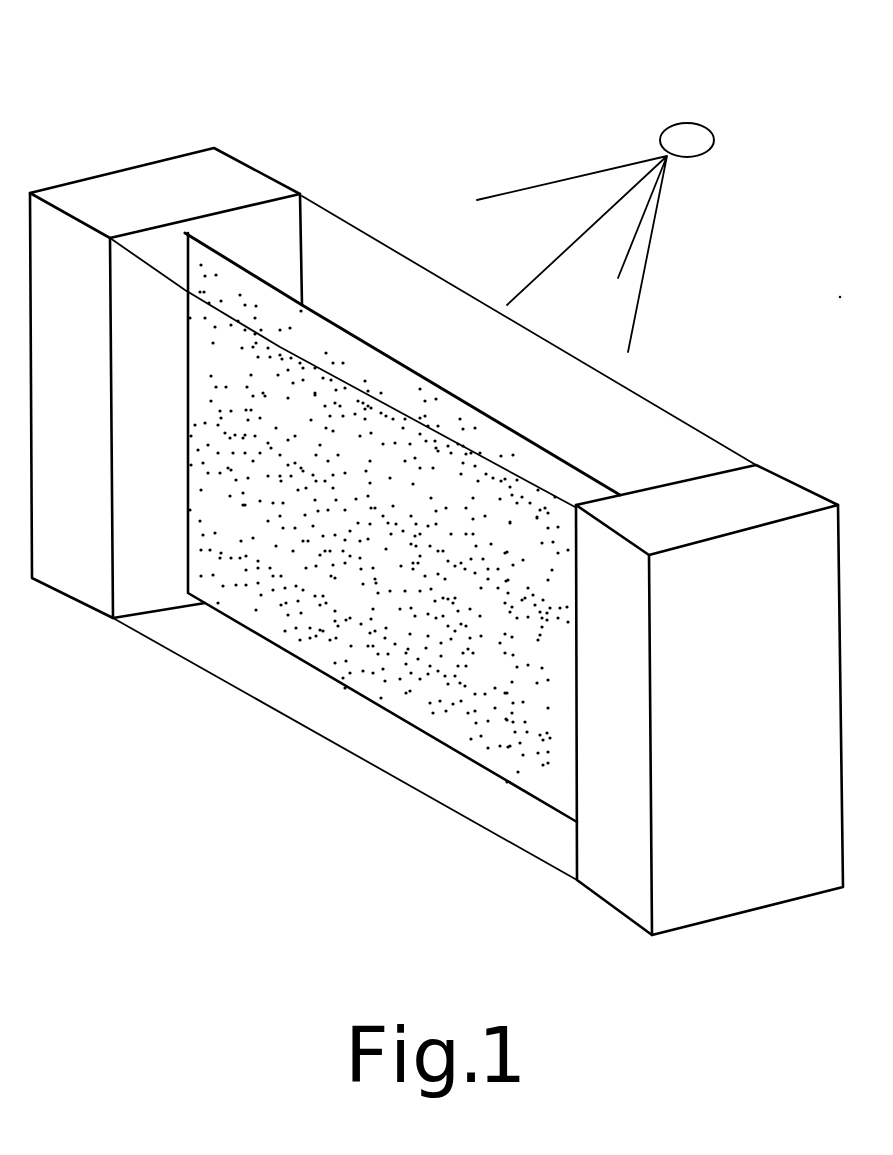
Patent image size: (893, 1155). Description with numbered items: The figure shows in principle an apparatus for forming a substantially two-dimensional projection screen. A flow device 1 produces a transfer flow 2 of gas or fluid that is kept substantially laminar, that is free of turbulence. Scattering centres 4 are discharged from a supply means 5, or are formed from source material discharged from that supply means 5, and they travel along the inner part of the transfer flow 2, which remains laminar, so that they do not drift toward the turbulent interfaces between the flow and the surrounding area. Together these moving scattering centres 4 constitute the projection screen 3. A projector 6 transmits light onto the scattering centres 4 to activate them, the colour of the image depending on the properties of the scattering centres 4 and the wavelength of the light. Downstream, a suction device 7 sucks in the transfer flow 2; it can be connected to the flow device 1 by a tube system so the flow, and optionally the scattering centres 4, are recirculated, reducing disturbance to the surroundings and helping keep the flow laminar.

The flow device 1 is at (233, 171).
The transfer flow 2 is at (322, 230).
The projection screen 3 is at (341, 643).
The scattering centres 4 is at (243, 503).
The supply means 5 is at (188, 250).
The projector 6 is at (688, 135).
The suction device 7 is at (760, 487).